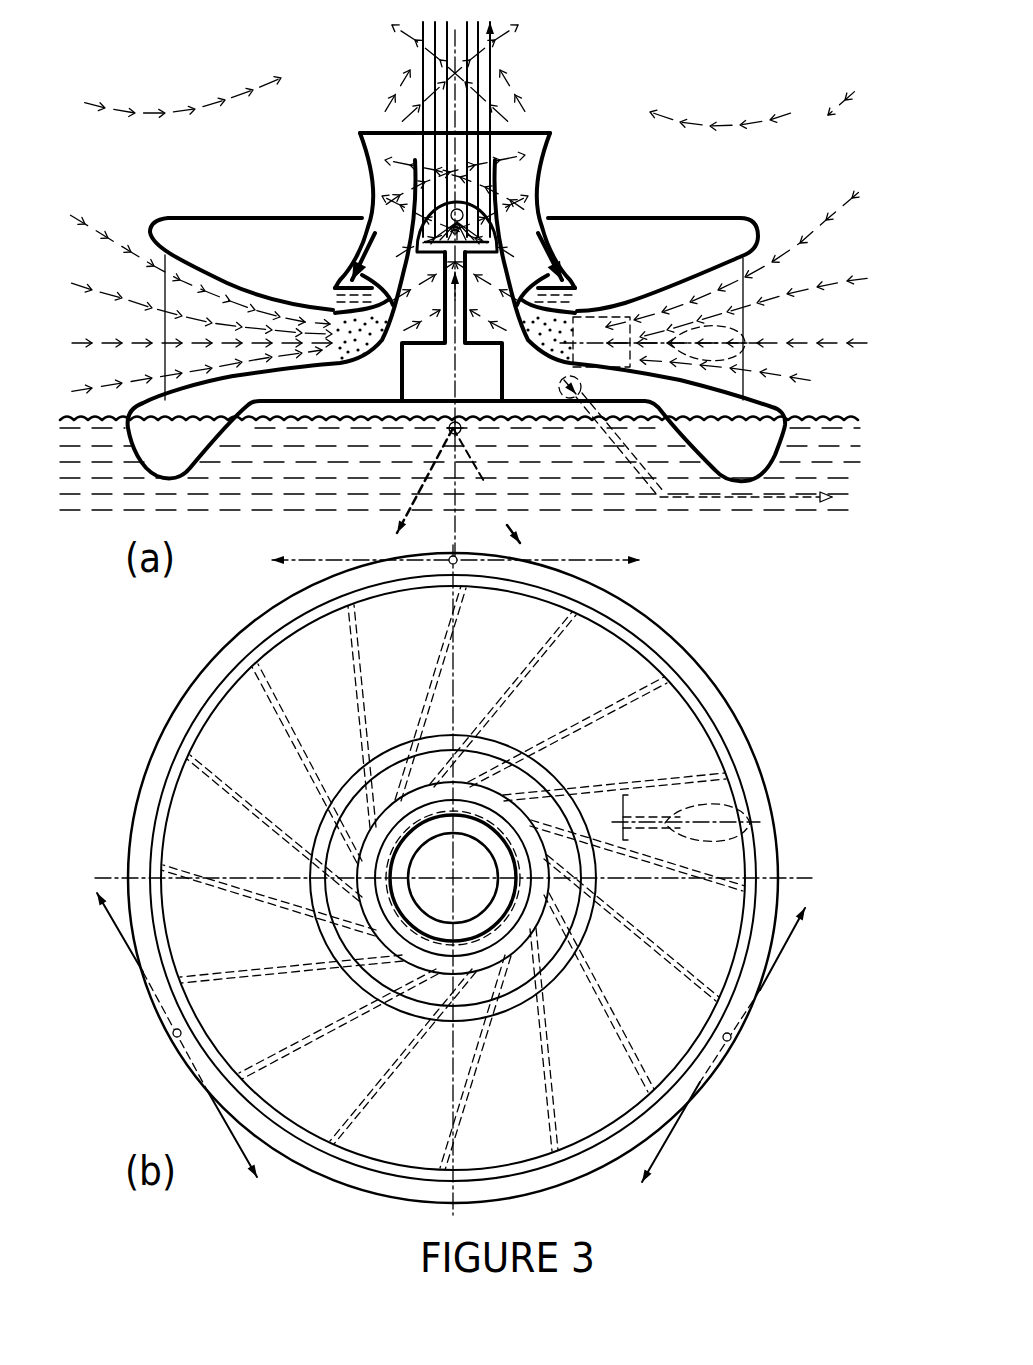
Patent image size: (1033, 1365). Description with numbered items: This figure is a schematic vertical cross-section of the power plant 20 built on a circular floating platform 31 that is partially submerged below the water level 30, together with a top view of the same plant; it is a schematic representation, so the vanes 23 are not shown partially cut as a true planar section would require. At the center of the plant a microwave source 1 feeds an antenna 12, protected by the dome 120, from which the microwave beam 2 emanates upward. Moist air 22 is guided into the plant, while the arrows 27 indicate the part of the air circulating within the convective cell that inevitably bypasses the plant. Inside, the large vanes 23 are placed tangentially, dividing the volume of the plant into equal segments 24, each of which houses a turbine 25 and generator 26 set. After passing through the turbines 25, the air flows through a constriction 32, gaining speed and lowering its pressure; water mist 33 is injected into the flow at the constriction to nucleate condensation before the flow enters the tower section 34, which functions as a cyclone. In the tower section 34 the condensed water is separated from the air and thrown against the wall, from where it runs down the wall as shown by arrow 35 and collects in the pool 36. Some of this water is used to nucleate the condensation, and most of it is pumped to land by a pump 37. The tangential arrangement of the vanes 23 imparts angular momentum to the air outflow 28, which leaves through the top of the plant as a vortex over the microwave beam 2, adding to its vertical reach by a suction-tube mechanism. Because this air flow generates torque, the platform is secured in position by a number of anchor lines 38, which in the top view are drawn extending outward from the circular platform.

The microwave source 1 is at (472, 383).
The microwave beam 2 is at (436, 110).
The antenna 12 is at (345, 268).
The power plant 20 is at (243, 212).
The airflow 22 is at (837, 213).
The vanes 23 is at (728, 303).
The segments 24 is at (657, 728).
The turbine 25 is at (593, 335).
The generator 26 is at (720, 333).
The bypassing air arrows 27 is at (768, 83).
The air outflow vortex 28 is at (603, 83).
The water level 30 is at (876, 383).
The floating platform 31 is at (173, 437).
The constriction 32 is at (374, 233).
The water mist 33 is at (355, 340).
The tower section 34 is at (616, 183).
The water run-down arrow 35 is at (540, 235).
The pool 36 is at (643, 275).
The pump 37 is at (560, 393).
The anchor lines 38 is at (412, 507).
The dome 120 is at (360, 136).